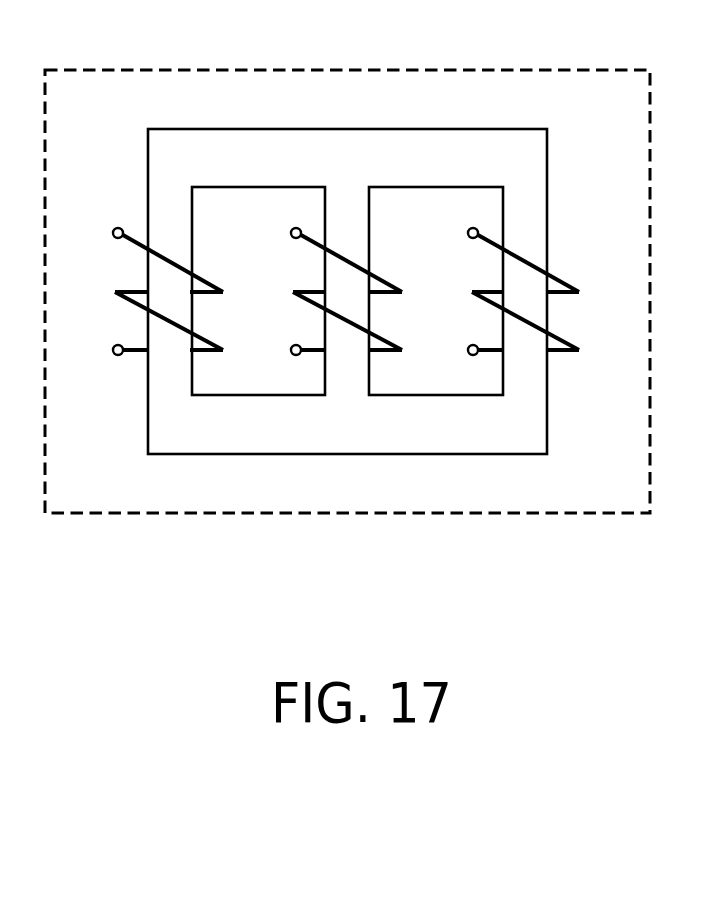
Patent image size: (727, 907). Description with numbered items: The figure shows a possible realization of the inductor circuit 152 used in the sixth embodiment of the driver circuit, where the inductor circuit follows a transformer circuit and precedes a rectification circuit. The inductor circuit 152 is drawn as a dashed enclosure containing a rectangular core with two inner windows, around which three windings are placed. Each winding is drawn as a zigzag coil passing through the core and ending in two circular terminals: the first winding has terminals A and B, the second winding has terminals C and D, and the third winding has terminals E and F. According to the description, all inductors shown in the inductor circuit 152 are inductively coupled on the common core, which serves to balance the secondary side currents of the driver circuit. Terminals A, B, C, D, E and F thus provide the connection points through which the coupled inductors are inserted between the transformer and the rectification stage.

The inductor circuit 152 is at (347, 329).
The first winding terminal A is at (157, 256).
The first winding terminal B is at (157, 350).
The second winding terminal C is at (335, 256).
The second winding terminal D is at (335, 350).
The third winding terminal E is at (512, 256).
The third winding terminal F is at (512, 350).